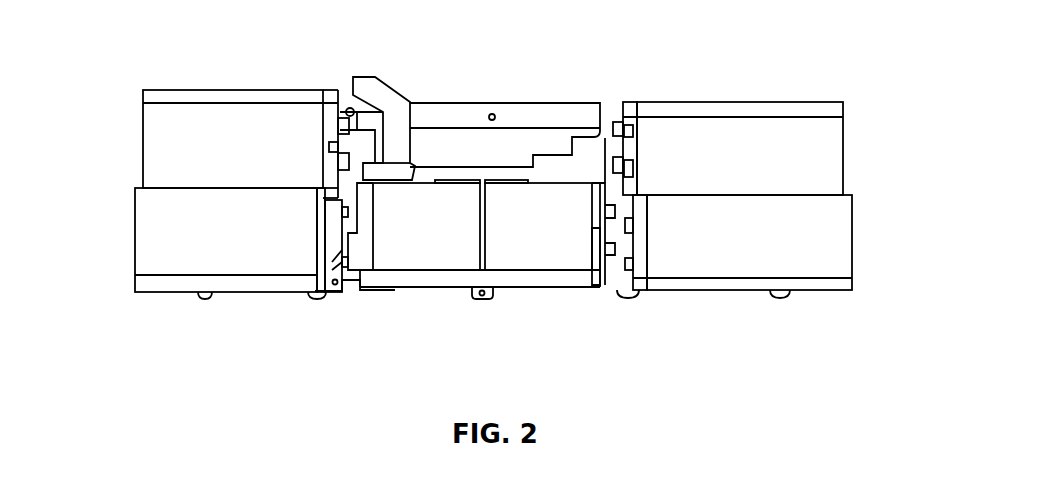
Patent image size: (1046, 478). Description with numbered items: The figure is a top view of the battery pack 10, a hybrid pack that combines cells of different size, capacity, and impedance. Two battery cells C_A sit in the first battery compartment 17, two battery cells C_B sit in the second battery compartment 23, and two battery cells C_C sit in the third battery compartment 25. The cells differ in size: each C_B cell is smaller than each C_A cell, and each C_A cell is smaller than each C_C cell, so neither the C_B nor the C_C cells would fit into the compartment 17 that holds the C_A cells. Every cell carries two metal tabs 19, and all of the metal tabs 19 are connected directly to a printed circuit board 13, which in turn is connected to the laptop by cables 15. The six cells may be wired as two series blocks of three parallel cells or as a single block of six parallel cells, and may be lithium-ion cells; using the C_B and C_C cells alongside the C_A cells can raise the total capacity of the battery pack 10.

The battery pack 10 is at (799, 70).
The printed circuit board 13 is at (328, 250).
The cables 15 is at (395, 98).
The first battery compartment 17 is at (117, 77).
The metal tabs 19 is at (618, 160).
The second battery compartment 23 is at (583, 308).
The third battery compartment 25 is at (880, 77).